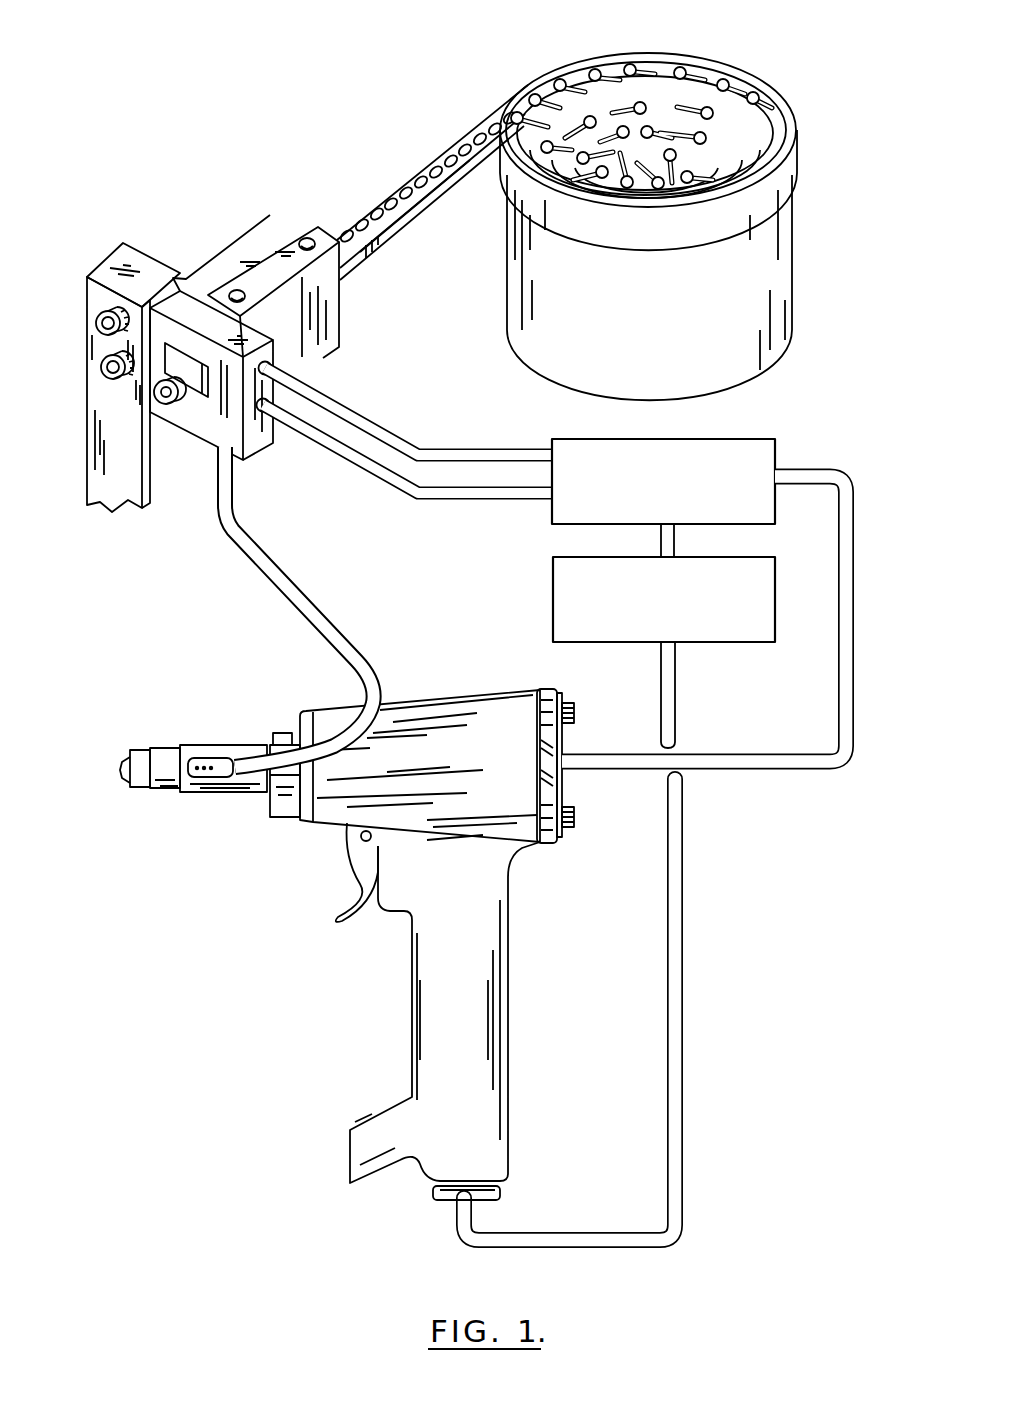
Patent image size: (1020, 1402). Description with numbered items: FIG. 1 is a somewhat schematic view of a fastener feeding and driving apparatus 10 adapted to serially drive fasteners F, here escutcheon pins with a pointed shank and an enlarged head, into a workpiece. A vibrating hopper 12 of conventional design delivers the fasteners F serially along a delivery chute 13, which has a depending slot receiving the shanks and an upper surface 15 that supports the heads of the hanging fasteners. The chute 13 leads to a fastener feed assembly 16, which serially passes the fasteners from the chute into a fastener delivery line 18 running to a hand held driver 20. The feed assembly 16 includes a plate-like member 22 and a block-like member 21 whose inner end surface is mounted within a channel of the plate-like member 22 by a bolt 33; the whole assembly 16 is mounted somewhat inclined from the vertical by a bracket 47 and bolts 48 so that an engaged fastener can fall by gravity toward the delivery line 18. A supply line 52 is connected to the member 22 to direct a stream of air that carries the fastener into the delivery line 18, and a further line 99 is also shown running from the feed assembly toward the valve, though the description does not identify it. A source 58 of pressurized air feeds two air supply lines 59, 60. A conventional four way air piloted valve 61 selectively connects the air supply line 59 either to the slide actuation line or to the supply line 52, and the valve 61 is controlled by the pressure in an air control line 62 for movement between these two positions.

The fastener feeding and driving apparatus 10 is at (307, 118).
The vibrating hopper 12 is at (780, 292).
The delivery chute 13 is at (393, 234).
The upper surface 15 is at (450, 182).
The fastener feed assembly 16 is at (227, 243).
The fastener delivery line 18 is at (290, 606).
The hand held driver 20 is at (280, 904).
The block-like member 21 is at (272, 241).
The plate-like member 22 is at (132, 263).
The bolt 33 is at (170, 410).
The bracket 47 is at (103, 395).
The bolts 48 is at (101, 372).
The supply line 52 is at (383, 432).
The source of pressurized air 58 is at (562, 575).
The air supply line 59 is at (677, 547).
The air supply line 60 is at (668, 687).
The four way air piloted valve 61 is at (735, 447).
The air control line 62 is at (847, 548).
The air line 99 is at (357, 457).
The fasteners F is at (645, 68).